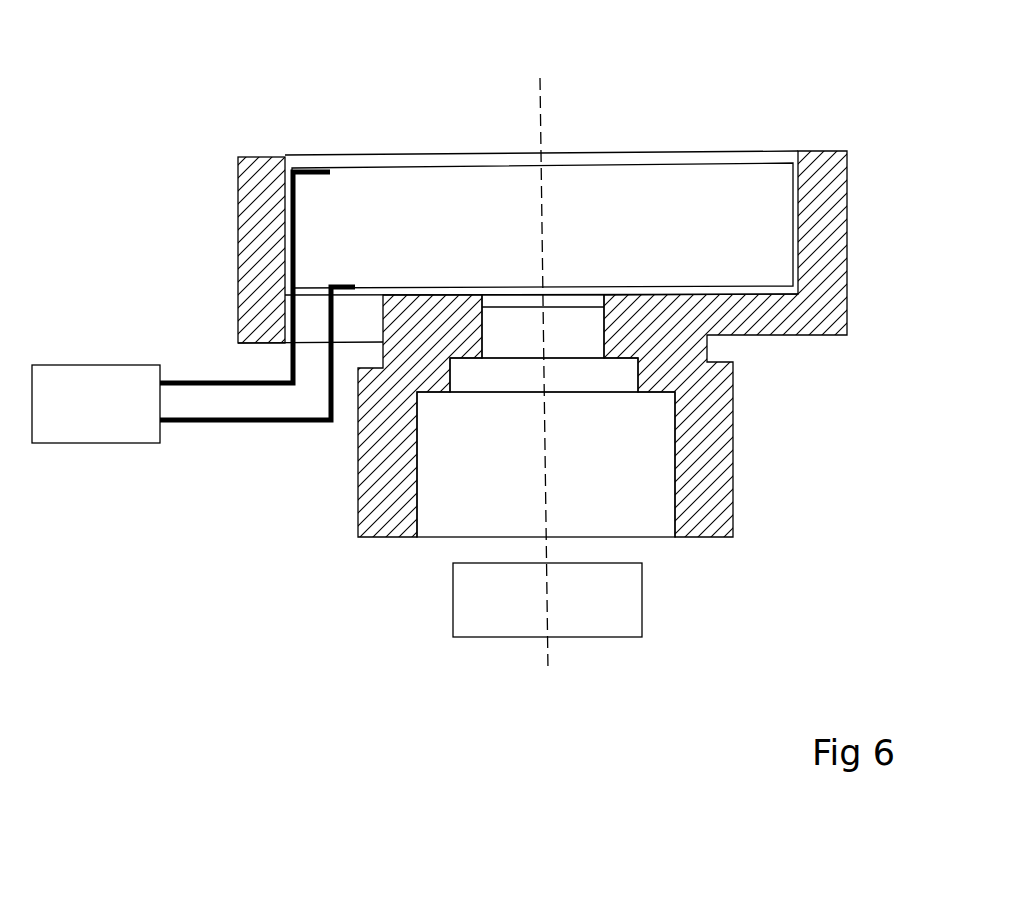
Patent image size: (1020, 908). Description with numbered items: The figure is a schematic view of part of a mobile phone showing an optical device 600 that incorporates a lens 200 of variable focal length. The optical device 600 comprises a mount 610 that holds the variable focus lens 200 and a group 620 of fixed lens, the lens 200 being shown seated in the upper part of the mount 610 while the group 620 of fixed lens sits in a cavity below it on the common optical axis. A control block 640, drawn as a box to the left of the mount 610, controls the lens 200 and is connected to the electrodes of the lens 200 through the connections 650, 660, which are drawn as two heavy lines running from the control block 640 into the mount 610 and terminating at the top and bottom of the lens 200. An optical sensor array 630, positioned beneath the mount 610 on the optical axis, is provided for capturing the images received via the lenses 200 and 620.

The optical device 600 is at (439, 336).
The mount 610 is at (262, 229).
The lens of variable focal length 200 is at (685, 210).
The group of fixed lens 620 is at (620, 467).
The optical sensor array 630 is at (600, 597).
The control block 640 is at (110, 428).
The connection 650 is at (308, 156).
The connection 660 is at (338, 283).